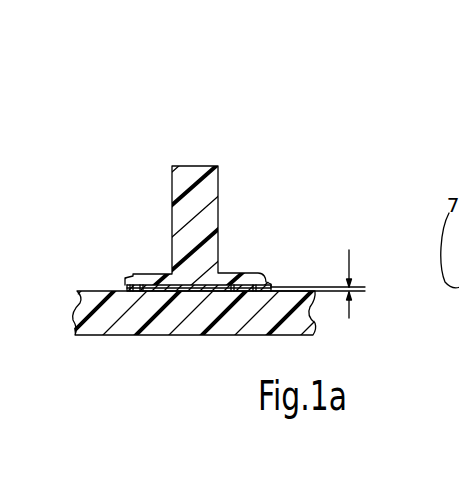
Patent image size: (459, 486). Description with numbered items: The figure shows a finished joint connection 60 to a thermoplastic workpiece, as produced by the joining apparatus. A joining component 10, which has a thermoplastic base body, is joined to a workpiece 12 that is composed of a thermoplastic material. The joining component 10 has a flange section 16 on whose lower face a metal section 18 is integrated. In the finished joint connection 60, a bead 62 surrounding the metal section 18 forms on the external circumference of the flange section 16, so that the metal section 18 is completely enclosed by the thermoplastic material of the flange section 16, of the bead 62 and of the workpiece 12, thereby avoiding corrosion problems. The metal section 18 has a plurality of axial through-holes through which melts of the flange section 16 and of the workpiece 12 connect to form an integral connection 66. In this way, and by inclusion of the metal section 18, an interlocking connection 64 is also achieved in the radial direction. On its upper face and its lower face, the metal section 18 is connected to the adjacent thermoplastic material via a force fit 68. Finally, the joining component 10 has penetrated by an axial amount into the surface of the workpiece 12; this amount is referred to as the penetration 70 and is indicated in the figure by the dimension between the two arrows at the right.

The finished joint connection 60 is at (291, 135).
The joining component 10 is at (218, 175).
The workpiece 12 is at (118, 310).
The flange section 16 is at (242, 275).
The metal section 18 is at (192, 291).
The bead 62 is at (265, 283).
The interlocking connection 64 is at (128, 278).
The integral connection 66 is at (125, 292).
The force fit 68 is at (236, 291).
The penetration 70 is at (353, 289).